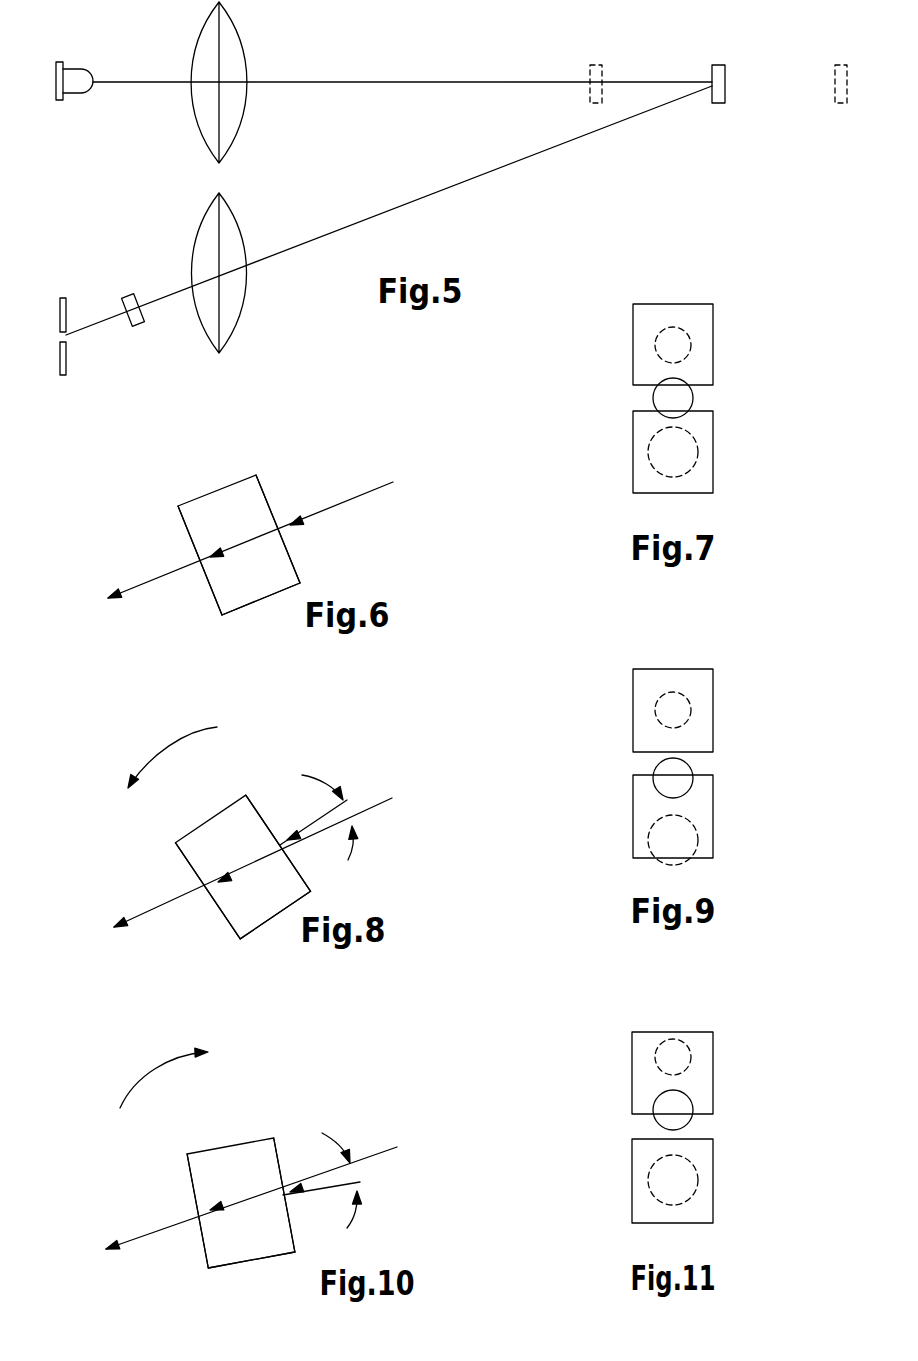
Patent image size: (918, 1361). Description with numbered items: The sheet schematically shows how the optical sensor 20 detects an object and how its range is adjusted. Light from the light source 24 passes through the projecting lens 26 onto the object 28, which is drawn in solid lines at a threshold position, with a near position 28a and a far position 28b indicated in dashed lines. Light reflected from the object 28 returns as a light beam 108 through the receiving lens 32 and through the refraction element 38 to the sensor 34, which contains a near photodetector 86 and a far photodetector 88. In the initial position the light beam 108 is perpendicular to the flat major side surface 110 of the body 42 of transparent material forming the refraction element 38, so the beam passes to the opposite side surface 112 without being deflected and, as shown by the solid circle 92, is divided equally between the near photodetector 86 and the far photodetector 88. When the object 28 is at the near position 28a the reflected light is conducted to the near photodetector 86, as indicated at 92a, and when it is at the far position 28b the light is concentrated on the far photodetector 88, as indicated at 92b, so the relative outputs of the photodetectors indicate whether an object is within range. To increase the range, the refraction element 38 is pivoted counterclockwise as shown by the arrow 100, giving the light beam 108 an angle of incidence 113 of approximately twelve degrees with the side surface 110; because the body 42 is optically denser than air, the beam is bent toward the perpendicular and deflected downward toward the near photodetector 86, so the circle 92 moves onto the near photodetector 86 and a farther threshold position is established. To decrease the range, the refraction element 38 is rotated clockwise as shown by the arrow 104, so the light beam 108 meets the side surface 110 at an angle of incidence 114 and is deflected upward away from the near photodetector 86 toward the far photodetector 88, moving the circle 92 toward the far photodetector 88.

In FIG. 5, the optical sensor 20 is at (325, 62).
In FIG. 5, the light source 24 is at (77, 67).
In FIG. 5, the projecting lens 26 is at (227, 52).
In FIG. 5, the object 28 is at (723, 65).
In FIG. 5, the near position of object 28a is at (592, 62).
In FIG. 5, the far position of object 28b is at (840, 65).
In FIG. 5, the receiving lens 32 is at (227, 298).
In FIG. 5, the sensor 34 is at (67, 283).
In FIG. 7, the sensor 34 is at (703, 285).
In FIG. 9, the sensor 34 is at (703, 650).
In FIG. 11, the sensor 34 is at (702, 1015).
In FIG. 5, the refraction element 38 is at (132, 292).
In FIG. 6, the refraction element 38 is at (206, 485).
In FIG. 8, the refraction element 38 is at (197, 810).
In FIG. 10, the refraction element 38 is at (205, 1133).
In FIG. 6, the body of transparent material 42 is at (198, 518).
In FIG. 8, the body of transparent material 42 is at (197, 848).
In FIG. 10, the body of transparent material 42 is at (198, 1167).
In FIG. 5, the near photodetector 86 is at (58, 358).
In FIG. 7, the near photodetector 86 is at (642, 480).
In FIG. 9, the near photodetector 86 is at (642, 813).
In FIG. 11, the near photodetector 86 is at (642, 1208).
In FIG. 5, the far photodetector 88 is at (58, 320).
In FIG. 7, the far photodetector 88 is at (642, 353).
In FIG. 9, the far photodetector 88 is at (642, 717).
In FIG. 11, the far photodetector 88 is at (642, 1082).
In FIG. 7, the circle of reflected light 92 is at (692, 390).
In FIG. 9, the circle of reflected light 92 is at (692, 770).
In FIG. 11, the circle of reflected light 92 is at (692, 1103).
In FIG. 7, the reflected light at near position 92a is at (697, 470).
In FIG. 9, the reflected light at near position 92a is at (697, 857).
In FIG. 11, the reflected light at near position 92a is at (697, 1197).
In FIG. 7, the reflected light at far position 92b is at (692, 353).
In FIG. 9, the reflected light at far position 92b is at (692, 718).
In FIG. 11, the reflected light at far position 92b is at (692, 1067).
In FIG. 8, the arrow indicating counterclockwise pivoting 100 is at (167, 743).
In FIG. 10, the arrow indicating clockwise rotation 104 is at (157, 1063).
In FIG. 5, the light beam 108 is at (390, 210).
In FIG. 6, the light beam 108 is at (335, 505).
In FIG. 8, the light beam 108 is at (373, 800).
In FIG. 10, the light beam 108 is at (382, 1152).
In FIG. 6, the flat major side surface 110 is at (266, 492).
In FIG. 8, the flat major side surface 110 is at (260, 812).
In FIG. 10, the flat major side surface 110 is at (275, 1137).
In FIG. 6, the opposite side surface 112 is at (205, 580).
In FIG. 8, the opposite side surface 112 is at (217, 907).
In FIG. 10, the opposite side surface 112 is at (203, 1233).
In FIG. 8, the angle of incidence 113 is at (357, 860).
In FIG. 10, the angle of incidence 114 is at (353, 1228).